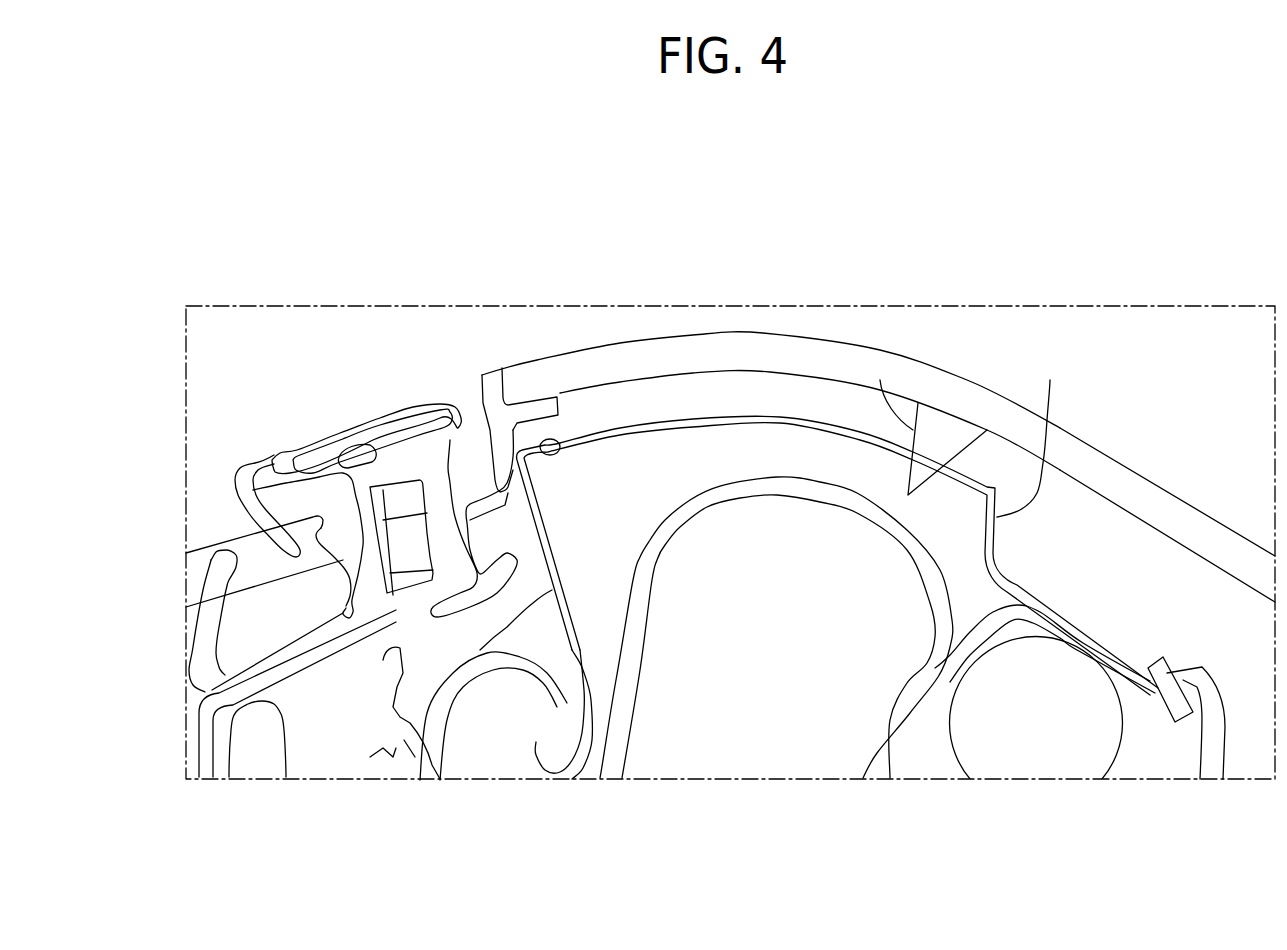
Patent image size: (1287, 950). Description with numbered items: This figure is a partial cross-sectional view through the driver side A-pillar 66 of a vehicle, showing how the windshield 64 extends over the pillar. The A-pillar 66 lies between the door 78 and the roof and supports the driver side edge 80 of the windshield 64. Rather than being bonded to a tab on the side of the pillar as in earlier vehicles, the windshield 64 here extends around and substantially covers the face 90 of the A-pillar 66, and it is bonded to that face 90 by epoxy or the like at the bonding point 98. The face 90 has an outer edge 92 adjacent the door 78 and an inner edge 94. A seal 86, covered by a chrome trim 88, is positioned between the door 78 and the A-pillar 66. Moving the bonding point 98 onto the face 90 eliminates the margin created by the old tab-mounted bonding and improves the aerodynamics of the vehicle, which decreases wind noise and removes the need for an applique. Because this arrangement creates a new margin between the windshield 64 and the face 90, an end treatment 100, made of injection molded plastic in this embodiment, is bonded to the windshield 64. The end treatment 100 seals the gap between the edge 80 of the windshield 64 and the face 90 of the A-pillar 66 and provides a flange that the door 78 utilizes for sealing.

The windshield 64 is at (1090, 447).
The driver side A-pillar 66 is at (529, 750).
The driver side door 78 is at (269, 707).
The driver side edge 80 is at (763, 333).
The seal 86 is at (463, 437).
The chrome trim 88 is at (305, 440).
The face 90 is at (630, 428).
The outer edge 92 is at (432, 775).
The inner edge 94 is at (1050, 380).
The bonding point 98 is at (880, 380).
The end treatment 100 is at (477, 400).